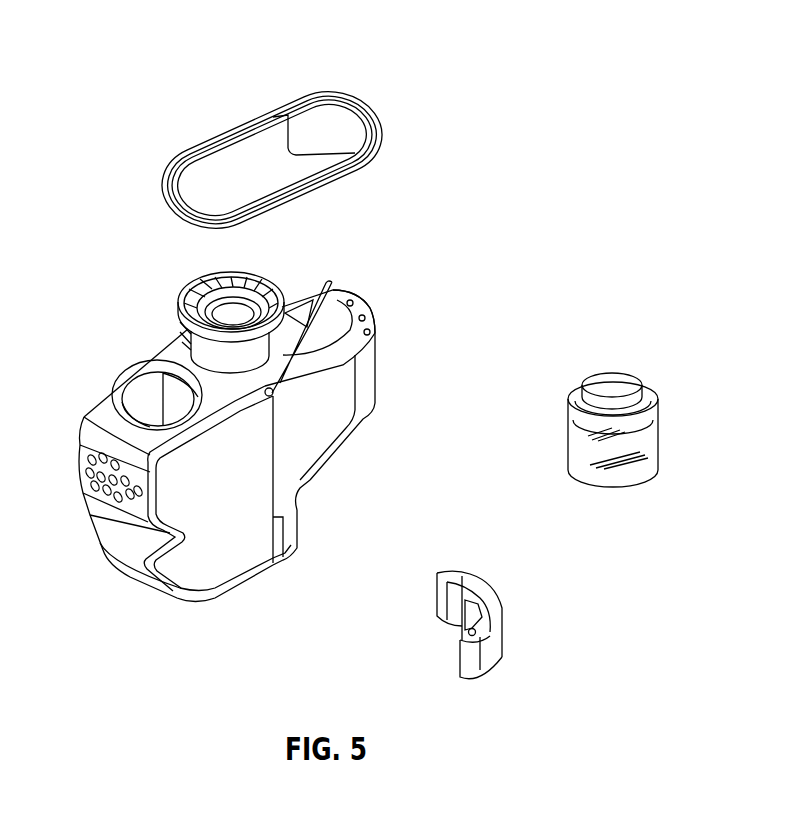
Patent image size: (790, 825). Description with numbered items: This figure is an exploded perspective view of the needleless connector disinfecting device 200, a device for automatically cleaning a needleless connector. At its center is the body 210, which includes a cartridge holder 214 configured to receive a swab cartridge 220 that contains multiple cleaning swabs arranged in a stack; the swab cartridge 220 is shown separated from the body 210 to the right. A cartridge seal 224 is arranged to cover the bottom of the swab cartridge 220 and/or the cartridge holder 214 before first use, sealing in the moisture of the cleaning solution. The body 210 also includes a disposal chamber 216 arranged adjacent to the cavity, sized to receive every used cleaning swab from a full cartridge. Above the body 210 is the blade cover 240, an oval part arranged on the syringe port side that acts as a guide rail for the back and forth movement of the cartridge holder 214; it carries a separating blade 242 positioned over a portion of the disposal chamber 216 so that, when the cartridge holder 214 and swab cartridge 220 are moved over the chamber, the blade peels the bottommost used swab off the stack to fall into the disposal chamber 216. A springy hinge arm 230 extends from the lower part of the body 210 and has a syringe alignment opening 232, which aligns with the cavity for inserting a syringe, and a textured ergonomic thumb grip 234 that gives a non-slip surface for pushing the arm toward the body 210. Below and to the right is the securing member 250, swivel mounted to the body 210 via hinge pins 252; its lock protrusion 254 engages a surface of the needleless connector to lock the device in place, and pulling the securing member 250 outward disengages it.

The needleless connector disinfecting device 200 is at (182, 68).
The body 210 is at (310, 447).
The cartridge holder 214 is at (180, 303).
The disposal chamber 216 is at (340, 324).
The swab cartridge 220 is at (662, 424).
The cartridge seal 224 is at (332, 284).
The springy hinge arm 230 is at (103, 542).
The syringe alignment opening 232 is at (142, 402).
The ergonomic thumb grip 234 is at (84, 472).
The blade cover 240 is at (163, 181).
The separating blade 242 is at (342, 138).
The securing member 250 is at (488, 602).
The hinge pins 252 is at (467, 634).
The lock protrusion 254 is at (480, 607).